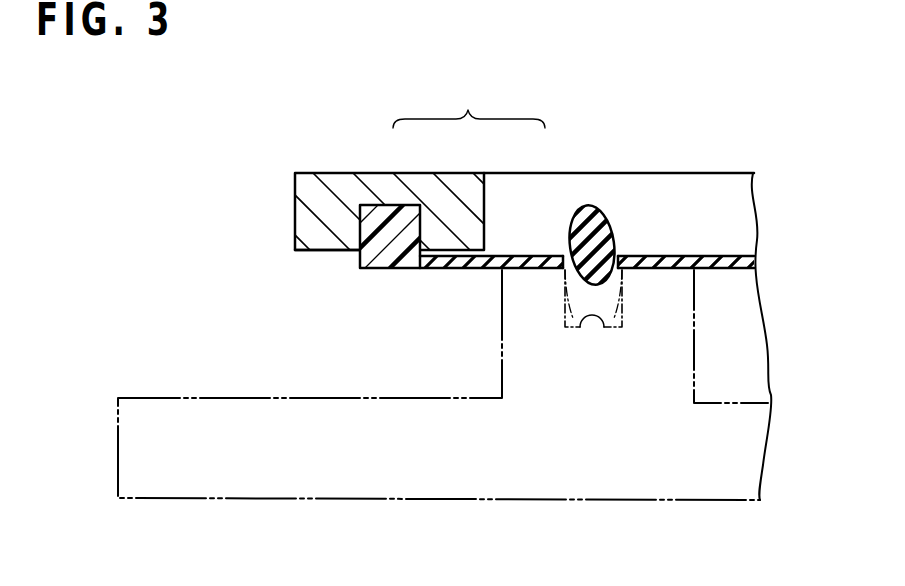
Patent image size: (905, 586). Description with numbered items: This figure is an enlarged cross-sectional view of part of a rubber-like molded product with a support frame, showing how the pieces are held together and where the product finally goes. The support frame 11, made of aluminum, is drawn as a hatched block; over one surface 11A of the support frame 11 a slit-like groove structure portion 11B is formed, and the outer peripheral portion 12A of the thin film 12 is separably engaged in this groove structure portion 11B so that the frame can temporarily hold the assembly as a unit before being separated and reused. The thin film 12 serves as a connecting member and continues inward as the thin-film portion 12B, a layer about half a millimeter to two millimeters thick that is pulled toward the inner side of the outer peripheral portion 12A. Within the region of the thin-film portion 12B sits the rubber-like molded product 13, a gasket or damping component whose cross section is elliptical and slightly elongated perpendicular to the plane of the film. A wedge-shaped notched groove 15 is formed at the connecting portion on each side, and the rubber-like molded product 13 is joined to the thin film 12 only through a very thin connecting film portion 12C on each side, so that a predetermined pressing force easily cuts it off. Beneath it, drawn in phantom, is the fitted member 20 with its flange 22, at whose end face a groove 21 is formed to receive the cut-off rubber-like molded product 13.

The support frame 11 is at (295, 204).
The one surface of the support frame 11A is at (318, 251).
The groove structure portion 11B is at (372, 212).
The thin film 12 is at (469, 103).
The outer peripheral portion 12A is at (405, 212).
The thin-film portion 12B is at (505, 256).
The connecting film portion 12C is at (563, 262).
The rubber-like molded product 13 is at (606, 214).
The wedge-shaped notched groove 15 is at (560, 318).
The fitted member 20 is at (756, 434).
The groove 21 is at (598, 330).
The flange 22 is at (694, 327).